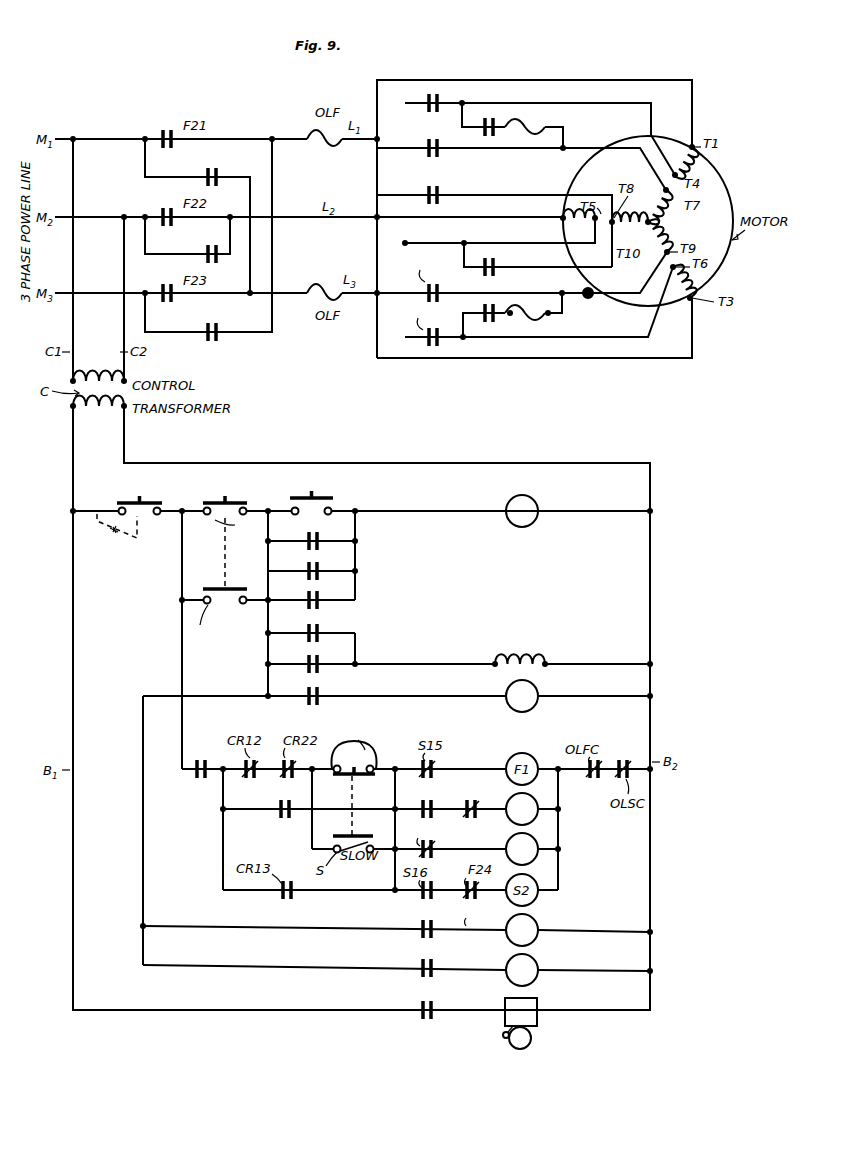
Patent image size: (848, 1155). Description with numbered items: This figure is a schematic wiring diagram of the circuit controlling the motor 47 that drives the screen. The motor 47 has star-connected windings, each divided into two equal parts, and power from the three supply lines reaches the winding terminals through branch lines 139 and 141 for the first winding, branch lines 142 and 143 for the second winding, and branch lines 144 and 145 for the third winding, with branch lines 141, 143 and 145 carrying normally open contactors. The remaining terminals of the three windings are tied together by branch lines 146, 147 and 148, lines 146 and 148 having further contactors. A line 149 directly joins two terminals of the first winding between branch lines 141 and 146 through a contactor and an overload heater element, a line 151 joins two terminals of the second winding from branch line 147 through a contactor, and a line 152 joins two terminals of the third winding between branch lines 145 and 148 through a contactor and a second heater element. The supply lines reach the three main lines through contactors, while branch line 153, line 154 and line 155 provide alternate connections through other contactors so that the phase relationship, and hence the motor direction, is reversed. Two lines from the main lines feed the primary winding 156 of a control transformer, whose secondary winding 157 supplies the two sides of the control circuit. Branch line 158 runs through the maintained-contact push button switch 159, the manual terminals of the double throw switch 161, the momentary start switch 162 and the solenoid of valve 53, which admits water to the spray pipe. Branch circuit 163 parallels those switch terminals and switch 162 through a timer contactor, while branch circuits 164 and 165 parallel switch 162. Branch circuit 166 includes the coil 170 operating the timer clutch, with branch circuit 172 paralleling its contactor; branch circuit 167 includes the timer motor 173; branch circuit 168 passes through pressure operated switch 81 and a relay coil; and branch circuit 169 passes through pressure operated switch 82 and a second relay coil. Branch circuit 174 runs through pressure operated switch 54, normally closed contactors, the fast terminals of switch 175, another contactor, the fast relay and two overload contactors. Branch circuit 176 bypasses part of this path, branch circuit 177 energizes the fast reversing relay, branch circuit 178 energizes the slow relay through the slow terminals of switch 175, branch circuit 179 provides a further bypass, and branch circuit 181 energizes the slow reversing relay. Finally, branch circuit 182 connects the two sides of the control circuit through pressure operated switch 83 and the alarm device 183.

The branch line 139 is at (570, 85).
The branch line 146 is at (626, 96).
The line 149 is at (565, 130).
The branch line 141 is at (540, 155).
The branch line 143 is at (490, 196).
The branch line 142 is at (478, 218).
The branch line 147 is at (512, 242).
The line 151 is at (530, 270).
The line 152 is at (472, 301).
The branch line 145 is at (590, 300).
The branch line 148 is at (595, 340).
The branch line 144 is at (570, 358).
The motor 47 is at (720, 170).
The branch line 153 is at (145, 156).
The line 154 is at (171, 238).
The line 155 is at (150, 320).
The primary winding 156 is at (98, 372).
The secondary winding 157 is at (94, 413).
The valve 53 is at (536, 500).
The branch line 158 is at (405, 512).
The push button switch 159 is at (153, 520).
The switch 161 is at (220, 548).
The switch 162 is at (330, 500).
The branch circuit 163 is at (259, 606).
The branch circuit 164 is at (290, 530).
The branch circuit 165 is at (275, 575).
The branch circuit 166 is at (400, 664).
The branch circuit 167 is at (400, 697).
The branch circuit 168 is at (305, 928).
The branch circuit 169 is at (274, 952).
The coil 170 is at (548, 670).
The branch circuit 172 is at (357, 633).
The motor 173 is at (538, 704).
The branch circuit 174 is at (183, 726).
The switch 175 is at (351, 797).
The branch circuit 176 is at (240, 810).
The branch circuit 177 is at (540, 802).
The branch circuit 178 is at (455, 850).
The branch circuit 179 is at (221, 860).
The branch circuit 181 is at (560, 878).
The branch circuit 182 is at (262, 1012).
The alarm device 183 is at (538, 1022).
The pressure operated switch 54 is at (193, 780).
The pressure operated switch 81 is at (418, 939).
The pressure operated switch 82 is at (418, 978).
The pressure operated switch 83 is at (418, 1018).